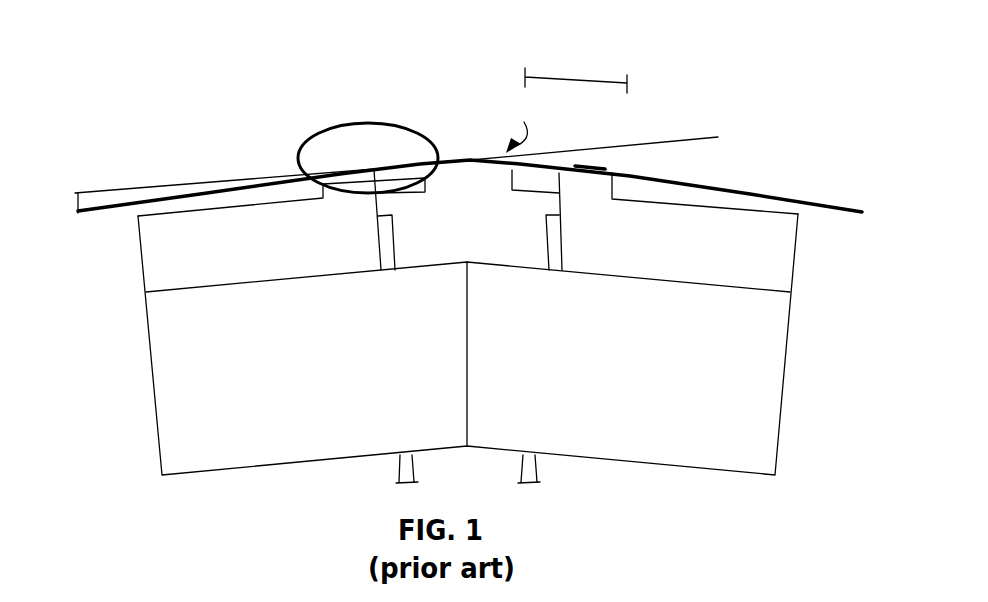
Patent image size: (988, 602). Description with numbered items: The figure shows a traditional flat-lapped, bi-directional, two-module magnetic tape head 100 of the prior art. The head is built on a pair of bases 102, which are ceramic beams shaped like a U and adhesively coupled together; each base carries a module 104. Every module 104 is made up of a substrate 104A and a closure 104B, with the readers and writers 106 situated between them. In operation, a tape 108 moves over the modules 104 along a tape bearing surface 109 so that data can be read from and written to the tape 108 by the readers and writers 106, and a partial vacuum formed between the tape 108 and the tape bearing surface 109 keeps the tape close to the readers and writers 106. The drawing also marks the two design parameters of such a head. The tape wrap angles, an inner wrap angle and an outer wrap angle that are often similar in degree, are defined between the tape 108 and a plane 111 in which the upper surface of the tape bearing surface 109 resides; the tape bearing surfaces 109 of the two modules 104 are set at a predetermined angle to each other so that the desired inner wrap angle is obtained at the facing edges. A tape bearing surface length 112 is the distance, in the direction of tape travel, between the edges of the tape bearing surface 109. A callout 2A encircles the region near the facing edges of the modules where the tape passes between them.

The flat-lapped bi-directional two-module magnetic tape head 100 is at (240, 126).
The base 102 is at (149, 358).
The module 104 is at (468, 194).
The substrate 104A is at (203, 237).
The closure 104B is at (507, 180).
The readers and writers 106 is at (374, 150).
The tape 108 is at (794, 196).
The tape bearing surface 109 is at (592, 148).
The plane 111 is at (697, 138).
The tape bearing surface length 112 is at (596, 61).
The detail view callout 2A is at (315, 134).